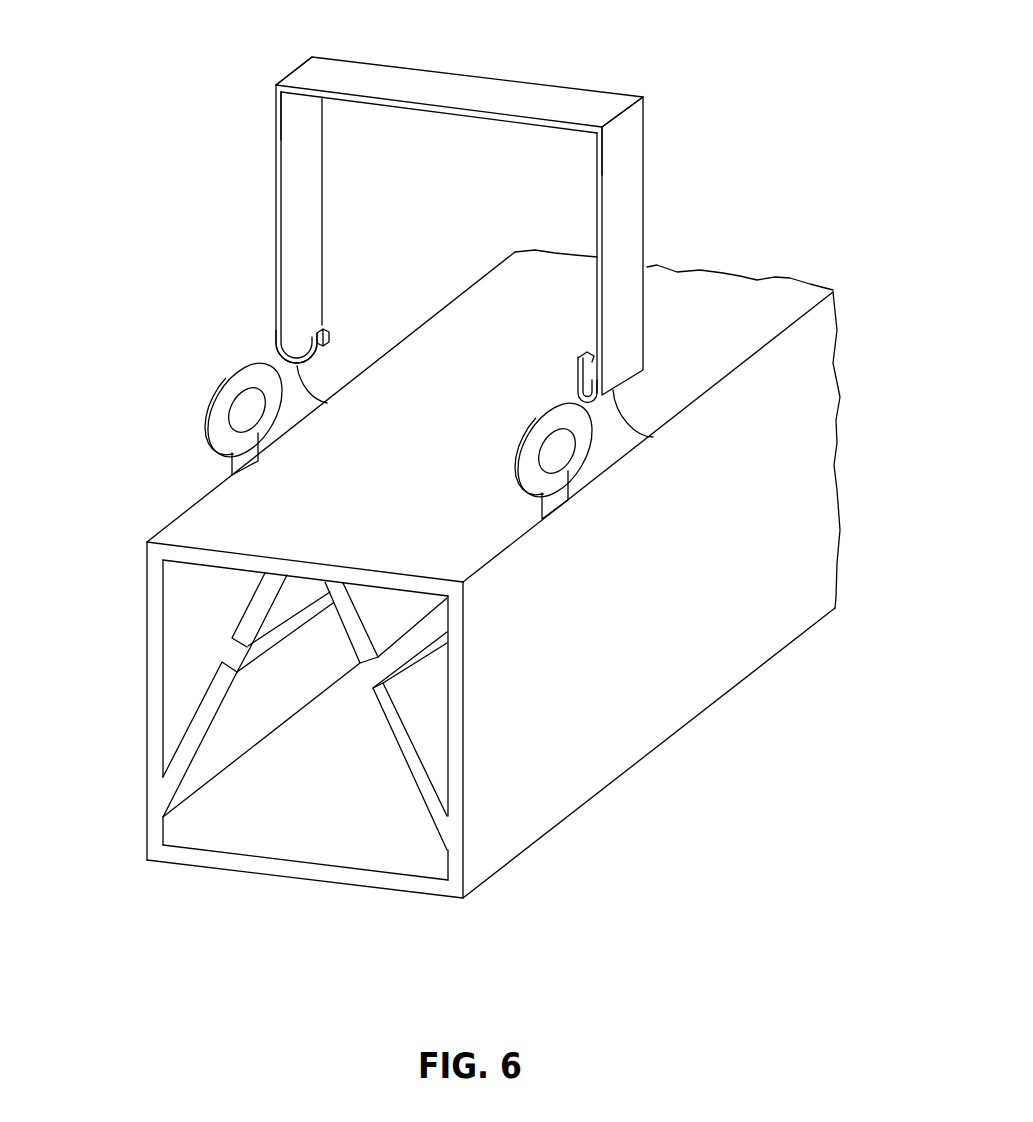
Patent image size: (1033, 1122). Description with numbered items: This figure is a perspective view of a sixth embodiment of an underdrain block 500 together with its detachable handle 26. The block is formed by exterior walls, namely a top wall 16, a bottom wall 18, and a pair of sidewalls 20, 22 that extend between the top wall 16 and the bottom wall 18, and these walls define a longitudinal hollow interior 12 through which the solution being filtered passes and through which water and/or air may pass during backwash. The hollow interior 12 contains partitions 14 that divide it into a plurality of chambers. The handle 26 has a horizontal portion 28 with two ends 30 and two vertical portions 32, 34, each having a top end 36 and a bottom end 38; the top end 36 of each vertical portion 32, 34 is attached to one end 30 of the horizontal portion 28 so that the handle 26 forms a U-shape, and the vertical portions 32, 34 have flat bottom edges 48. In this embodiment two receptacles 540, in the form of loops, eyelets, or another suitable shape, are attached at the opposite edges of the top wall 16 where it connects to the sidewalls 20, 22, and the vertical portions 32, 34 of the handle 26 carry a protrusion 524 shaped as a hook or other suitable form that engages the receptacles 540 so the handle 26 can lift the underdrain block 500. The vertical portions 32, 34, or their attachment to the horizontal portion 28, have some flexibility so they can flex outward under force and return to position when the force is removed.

The underdrain block 500 is at (184, 102).
The detachable handle 26 is at (523, 170).
The horizontal portion 28 is at (432, 88).
The ends 30 is at (320, 70).
The vertical portion 34 is at (291, 234).
The vertical portion 32 is at (634, 231).
The top end 36 is at (292, 135).
The bottom end 38 is at (297, 341).
The protrusion 524 is at (347, 348).
The bottom edges 48 is at (327, 403).
The receptacles 540 is at (286, 430).
The top wall 16 is at (364, 572).
The sidewall 20 is at (463, 731).
The sidewall 22 is at (152, 707).
The bottom wall 18 is at (293, 870).
The hollow interior 12 is at (305, 704).
The partitions 14 is at (198, 727).